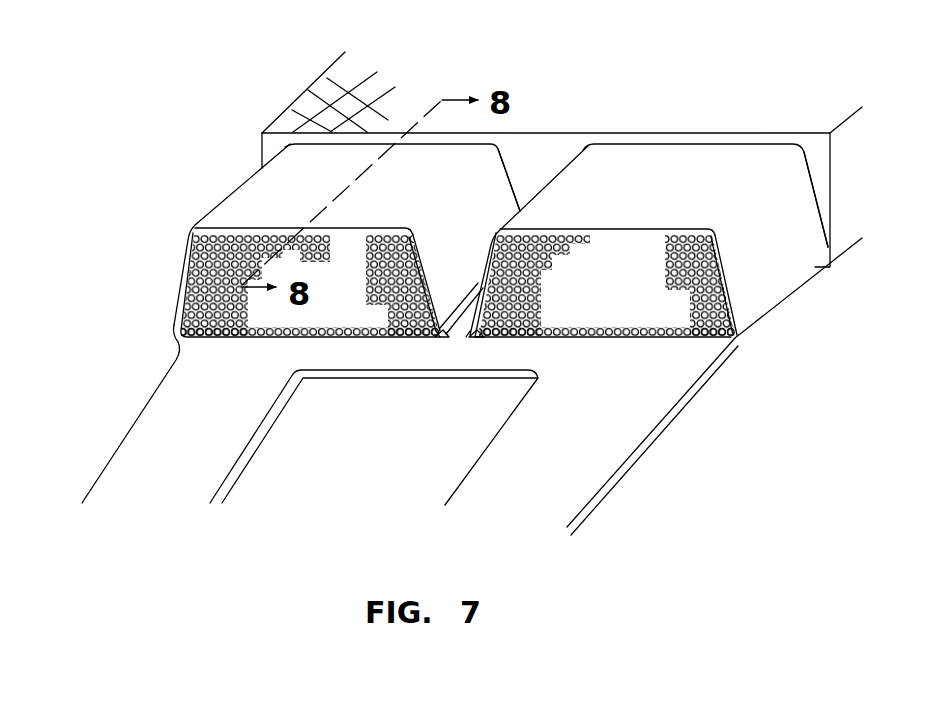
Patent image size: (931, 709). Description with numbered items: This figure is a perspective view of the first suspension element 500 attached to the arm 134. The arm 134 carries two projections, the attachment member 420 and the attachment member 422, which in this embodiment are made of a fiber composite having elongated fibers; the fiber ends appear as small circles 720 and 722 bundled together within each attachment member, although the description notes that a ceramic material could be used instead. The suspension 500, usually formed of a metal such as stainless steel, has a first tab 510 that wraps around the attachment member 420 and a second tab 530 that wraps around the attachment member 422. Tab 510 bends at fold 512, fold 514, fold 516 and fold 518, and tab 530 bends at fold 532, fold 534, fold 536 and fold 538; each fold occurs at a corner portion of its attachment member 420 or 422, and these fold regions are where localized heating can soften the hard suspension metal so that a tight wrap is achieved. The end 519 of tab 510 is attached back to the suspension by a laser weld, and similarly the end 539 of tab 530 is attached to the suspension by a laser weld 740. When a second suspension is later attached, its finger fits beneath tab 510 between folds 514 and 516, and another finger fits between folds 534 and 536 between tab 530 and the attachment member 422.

The arm 134 is at (322, 87).
The first suspension element 500 is at (112, 487).
The first tab 510 is at (308, 196).
The fold 512 is at (168, 338).
The fold 514 is at (210, 218).
The fold 516 is at (483, 165).
The fold 518 is at (433, 337).
The end of tab 510 519 is at (433, 336).
The second tab 530 is at (686, 196).
The fold 532 is at (735, 342).
The fold 534 is at (786, 160).
The fold 536 is at (562, 165).
The fold 538 is at (470, 337).
The end of tab 530 539 is at (466, 334).
The attachment member 420 is at (359, 314).
The attachment member 422 is at (630, 302).
The small circles 720 is at (440, 245).
The small circles 722 is at (717, 260).
The laser weld 740 is at (460, 323).